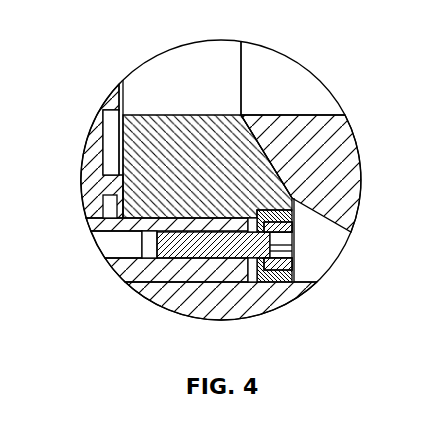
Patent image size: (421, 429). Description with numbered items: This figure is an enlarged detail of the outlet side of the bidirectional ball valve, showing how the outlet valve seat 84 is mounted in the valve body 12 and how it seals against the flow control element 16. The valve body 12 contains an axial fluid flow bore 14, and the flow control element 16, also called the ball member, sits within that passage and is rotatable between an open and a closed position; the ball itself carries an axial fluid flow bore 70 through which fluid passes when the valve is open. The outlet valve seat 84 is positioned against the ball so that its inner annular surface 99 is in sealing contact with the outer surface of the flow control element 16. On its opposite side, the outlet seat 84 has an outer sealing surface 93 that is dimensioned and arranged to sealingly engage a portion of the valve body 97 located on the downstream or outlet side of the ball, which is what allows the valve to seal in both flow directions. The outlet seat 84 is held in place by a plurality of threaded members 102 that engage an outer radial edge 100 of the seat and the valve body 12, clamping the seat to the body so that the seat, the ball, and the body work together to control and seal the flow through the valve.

The valve body 12 is at (100, 225).
The axial fluid flow bore 14 is at (188, 55).
The flow control element 16 is at (353, 168).
The axial fluid flow bore of the ball 70 is at (290, 73).
The outlet valve seat 84 is at (140, 150).
The outer sealing surface 93 is at (115, 192).
The portion of the valve body 97 is at (102, 182).
The inner annular surface 99 is at (264, 168).
The outer radial edge 100 is at (285, 212).
The threaded members 102 is at (147, 262).